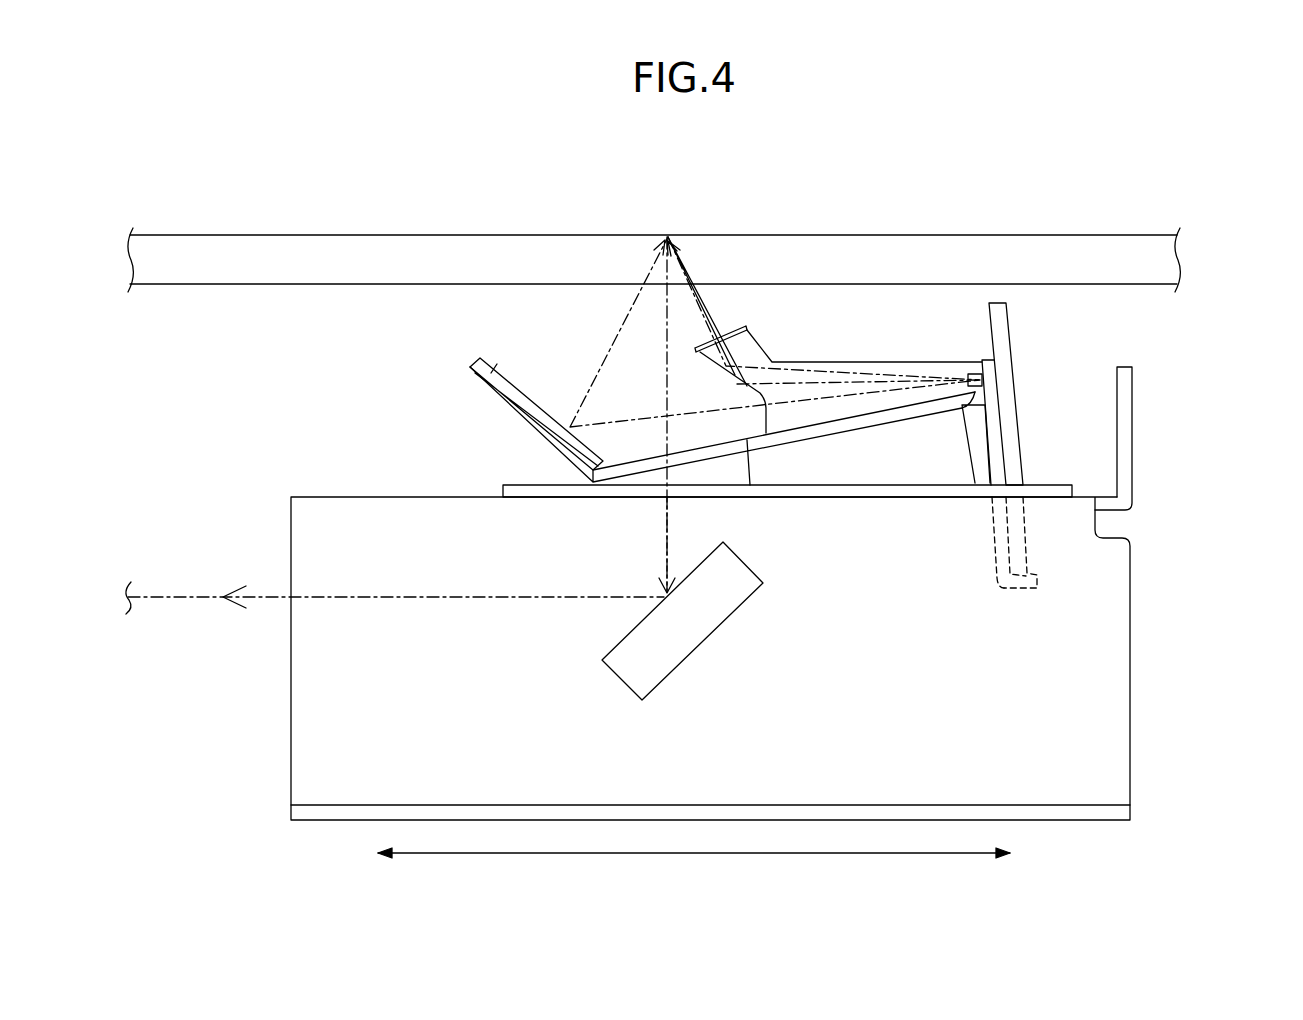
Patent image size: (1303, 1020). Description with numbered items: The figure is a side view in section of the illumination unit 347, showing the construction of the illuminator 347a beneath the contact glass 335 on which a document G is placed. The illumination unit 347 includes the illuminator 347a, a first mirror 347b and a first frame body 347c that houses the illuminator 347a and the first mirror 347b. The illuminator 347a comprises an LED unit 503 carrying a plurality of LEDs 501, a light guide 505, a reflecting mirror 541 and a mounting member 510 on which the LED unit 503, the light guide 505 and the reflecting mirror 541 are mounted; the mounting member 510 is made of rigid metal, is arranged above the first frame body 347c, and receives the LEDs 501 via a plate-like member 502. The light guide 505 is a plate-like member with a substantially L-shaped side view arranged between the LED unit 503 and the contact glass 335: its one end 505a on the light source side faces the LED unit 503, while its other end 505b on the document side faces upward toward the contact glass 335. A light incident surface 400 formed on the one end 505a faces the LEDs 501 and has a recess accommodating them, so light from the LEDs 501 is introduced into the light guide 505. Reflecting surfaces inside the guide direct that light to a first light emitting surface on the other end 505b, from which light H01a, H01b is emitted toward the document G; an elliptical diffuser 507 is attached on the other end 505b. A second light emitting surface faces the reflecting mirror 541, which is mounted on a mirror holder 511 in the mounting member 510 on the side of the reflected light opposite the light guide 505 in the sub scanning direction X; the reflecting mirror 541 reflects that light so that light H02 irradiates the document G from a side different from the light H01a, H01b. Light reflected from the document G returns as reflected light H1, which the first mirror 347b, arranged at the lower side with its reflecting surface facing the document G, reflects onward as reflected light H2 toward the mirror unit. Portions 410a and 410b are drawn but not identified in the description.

The contact glass 335 is at (1097, 245).
The illumination unit 347 is at (1172, 383).
The illuminator 347a is at (1040, 378).
The first mirror 347b is at (682, 665).
The first frame body 347c is at (1118, 770).
The light incident surface 400 is at (865, 427).
The holder upper portion 410a is at (742, 324).
The holder lower portion 410b is at (752, 433).
The LEDs 501 is at (984, 362).
The plate-like member 502 is at (1013, 410).
The LED unit 503 is at (1018, 318).
The light guide 505 is at (866, 486).
The one end 505a is at (976, 374).
The other end 505b is at (748, 328).
The elliptical diffuser 507 is at (718, 294).
The mounting member 510 is at (482, 393).
The mirror holder 511 is at (537, 427).
The reflecting mirror 541 is at (496, 365).
The document G is at (667, 232).
The light H01a is at (704, 298).
The light H01b is at (718, 297).
The light H02 is at (634, 300).
The reflected light H1 is at (670, 513).
The reflected light H2 is at (491, 602).
The sub scanning direction X is at (694, 872).